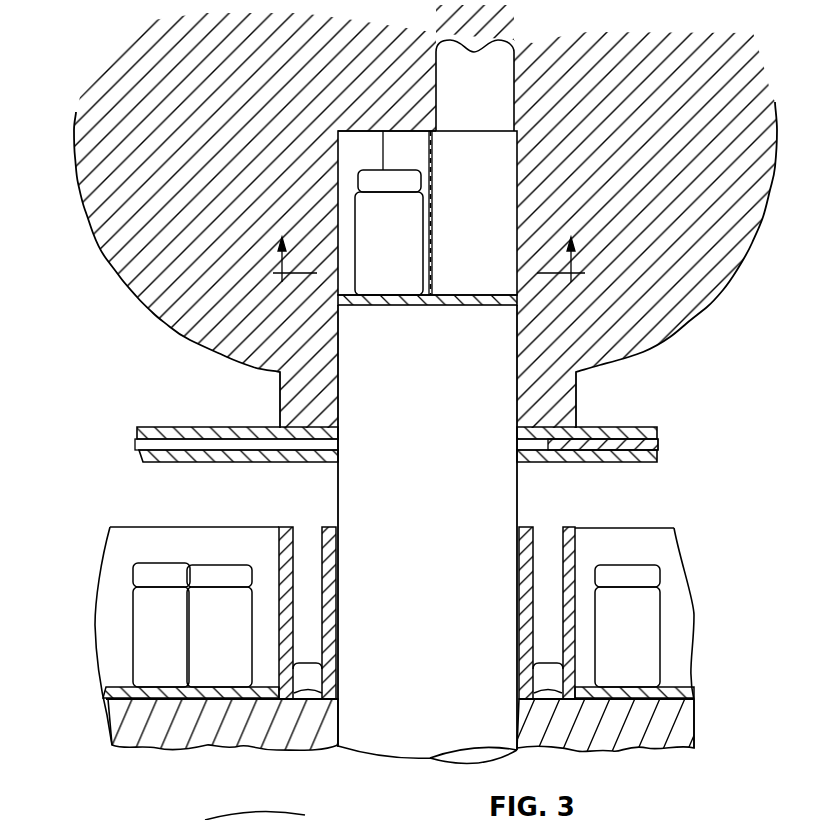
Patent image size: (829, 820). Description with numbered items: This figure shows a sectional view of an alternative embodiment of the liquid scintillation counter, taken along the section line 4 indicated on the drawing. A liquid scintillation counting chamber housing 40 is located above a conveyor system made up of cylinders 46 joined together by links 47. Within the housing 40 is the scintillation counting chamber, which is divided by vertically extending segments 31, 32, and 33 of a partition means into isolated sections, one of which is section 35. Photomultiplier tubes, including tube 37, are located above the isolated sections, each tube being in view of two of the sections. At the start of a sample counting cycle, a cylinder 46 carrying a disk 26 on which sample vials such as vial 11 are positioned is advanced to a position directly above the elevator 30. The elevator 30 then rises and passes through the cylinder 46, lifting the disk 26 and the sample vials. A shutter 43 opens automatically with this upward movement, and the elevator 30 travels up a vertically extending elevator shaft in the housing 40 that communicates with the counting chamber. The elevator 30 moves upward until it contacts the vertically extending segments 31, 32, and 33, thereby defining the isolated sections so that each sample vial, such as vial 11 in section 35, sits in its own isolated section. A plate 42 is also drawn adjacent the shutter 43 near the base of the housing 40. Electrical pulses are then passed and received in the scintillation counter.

The section line 4 is at (430, 268).
The sample vial 11 is at (394, 248).
The disk 26 is at (445, 294).
The elevator 30 is at (439, 389).
The vertically extending segment 31 is at (395, 146).
The vertically extending segment 32 is at (488, 232).
The vertically extending segment 33 is at (188, 818).
The isolated section 35 is at (378, 167).
The photomultiplier tube 37 is at (484, 102).
The liquid scintillation counting chamber housing 40 is at (684, 325).
The upper plate 42 is at (538, 463).
The shutter 43 is at (603, 447).
The cylinder 46 is at (322, 540).
The link 47 is at (318, 687).